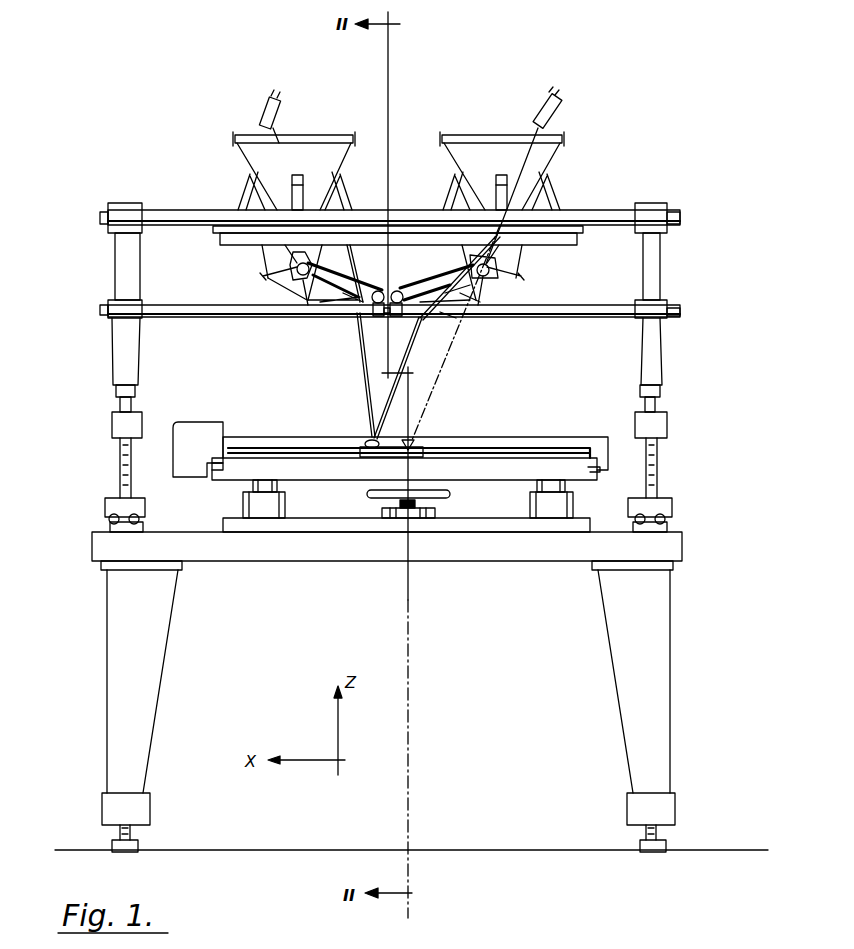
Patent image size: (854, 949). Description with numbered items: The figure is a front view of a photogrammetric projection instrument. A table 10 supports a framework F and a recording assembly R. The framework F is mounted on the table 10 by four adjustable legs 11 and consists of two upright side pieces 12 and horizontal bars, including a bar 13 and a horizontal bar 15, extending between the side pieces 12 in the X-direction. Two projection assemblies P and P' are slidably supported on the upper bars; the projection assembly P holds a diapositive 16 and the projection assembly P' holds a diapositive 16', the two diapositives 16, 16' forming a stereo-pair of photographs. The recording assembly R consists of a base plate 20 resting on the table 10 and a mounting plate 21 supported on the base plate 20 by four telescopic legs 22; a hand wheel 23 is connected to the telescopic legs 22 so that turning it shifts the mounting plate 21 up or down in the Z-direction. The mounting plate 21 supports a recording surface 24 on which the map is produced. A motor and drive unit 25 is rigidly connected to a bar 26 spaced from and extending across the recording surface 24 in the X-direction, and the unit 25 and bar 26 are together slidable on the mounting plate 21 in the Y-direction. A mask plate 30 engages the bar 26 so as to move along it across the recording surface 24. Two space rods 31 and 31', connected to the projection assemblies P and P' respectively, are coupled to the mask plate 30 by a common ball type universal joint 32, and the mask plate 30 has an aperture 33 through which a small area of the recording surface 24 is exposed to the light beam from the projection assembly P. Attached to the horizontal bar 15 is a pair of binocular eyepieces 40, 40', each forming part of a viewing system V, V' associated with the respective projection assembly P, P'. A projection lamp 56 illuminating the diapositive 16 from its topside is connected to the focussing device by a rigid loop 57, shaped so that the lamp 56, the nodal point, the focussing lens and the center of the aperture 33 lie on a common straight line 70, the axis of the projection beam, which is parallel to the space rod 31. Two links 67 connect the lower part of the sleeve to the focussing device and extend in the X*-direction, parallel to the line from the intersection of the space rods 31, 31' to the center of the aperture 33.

The table 10 is at (682, 547).
The adjustable legs 11 is at (122, 466).
The upright side pieces 12 is at (662, 265).
The bar 13 is at (598, 216).
The horizontal bar 15 is at (576, 306).
The diapositive 16 is at (502, 156).
The diapositive 16' is at (294, 150).
The base plate 20 is at (338, 506).
The mounting plate 21 is at (478, 468).
The telescopic legs 22 is at (263, 510).
The hand wheel 23 is at (405, 510).
The recording surface 24 is at (280, 455).
The motor and drive unit 25 is at (188, 422).
The bar 26 is at (240, 437).
The mask plate 30 is at (392, 448).
The space rod 31 is at (441, 378).
The space rod 31' is at (336, 375).
The ball type universal joint 32 is at (366, 441).
The aperture 33 is at (414, 442).
The binocular eyepiece 40 is at (409, 280).
The binocular eyepiece 40' is at (374, 278).
The projection lamp 56 is at (543, 123).
The rigid loop 57 is at (552, 126).
The links 67 is at (453, 317).
The common straight line 70 is at (558, 93).
The projection assembly P is at (620, 125).
The projection assembly P' is at (198, 92).
The viewing system V is at (413, 163).
The viewing system V' is at (374, 154).
The framework F is at (684, 359).
The recording assembly R is at (537, 409).